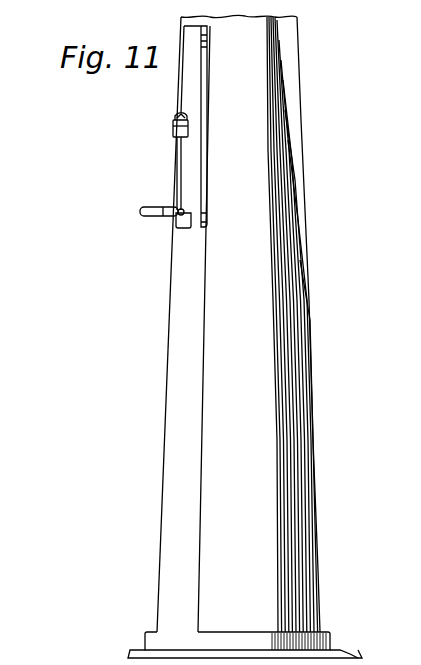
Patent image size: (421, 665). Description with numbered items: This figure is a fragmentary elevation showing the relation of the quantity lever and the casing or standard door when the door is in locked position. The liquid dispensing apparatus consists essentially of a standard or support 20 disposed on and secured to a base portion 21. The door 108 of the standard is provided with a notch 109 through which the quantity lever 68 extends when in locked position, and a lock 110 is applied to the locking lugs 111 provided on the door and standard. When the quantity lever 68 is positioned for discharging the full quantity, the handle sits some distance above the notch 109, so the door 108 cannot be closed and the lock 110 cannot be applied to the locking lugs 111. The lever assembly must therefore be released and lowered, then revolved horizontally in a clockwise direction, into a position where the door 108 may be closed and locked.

The standard 20 is at (268, 155).
The base portion 21 is at (329, 633).
The door 108 is at (189, 166).
The notch 109 is at (186, 228).
The lock 110 is at (172, 131).
The locking lugs 111 is at (177, 113).
The quantity handle 68 is at (140, 213).